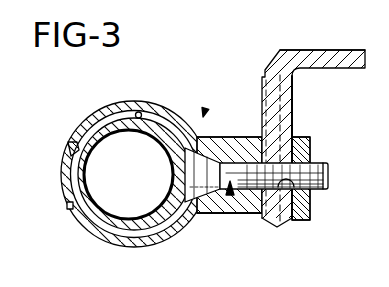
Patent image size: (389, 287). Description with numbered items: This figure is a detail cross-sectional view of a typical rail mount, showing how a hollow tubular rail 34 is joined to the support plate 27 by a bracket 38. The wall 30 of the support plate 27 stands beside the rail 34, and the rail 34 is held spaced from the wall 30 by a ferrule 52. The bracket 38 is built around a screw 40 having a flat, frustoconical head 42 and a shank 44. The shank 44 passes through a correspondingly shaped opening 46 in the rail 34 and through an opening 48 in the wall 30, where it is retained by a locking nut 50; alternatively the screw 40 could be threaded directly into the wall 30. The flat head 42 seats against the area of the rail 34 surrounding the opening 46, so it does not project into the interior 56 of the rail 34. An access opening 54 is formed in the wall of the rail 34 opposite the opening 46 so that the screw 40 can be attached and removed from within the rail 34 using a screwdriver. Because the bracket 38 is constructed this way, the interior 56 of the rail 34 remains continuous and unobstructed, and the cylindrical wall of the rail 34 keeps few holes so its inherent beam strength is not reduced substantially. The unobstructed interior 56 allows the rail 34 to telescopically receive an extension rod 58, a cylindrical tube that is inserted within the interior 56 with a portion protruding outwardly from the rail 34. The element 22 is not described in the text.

The mounting bracket 22 is at (318, 81).
The support plate 27 is at (318, 50).
The wall 30 is at (292, 113).
The rail 34 is at (92, 121).
The bracket 38 is at (205, 108).
The screw 40 is at (230, 195).
The head 42 is at (203, 214).
The shank 44 is at (318, 152).
The opening 46 is at (175, 129).
The opening 48 is at (292, 224).
The locking nut 50 is at (312, 198).
The ferrule 52 is at (223, 145).
The access opening 54 is at (70, 208).
The interior 56 is at (136, 112).
The extension rod 58 is at (118, 229).